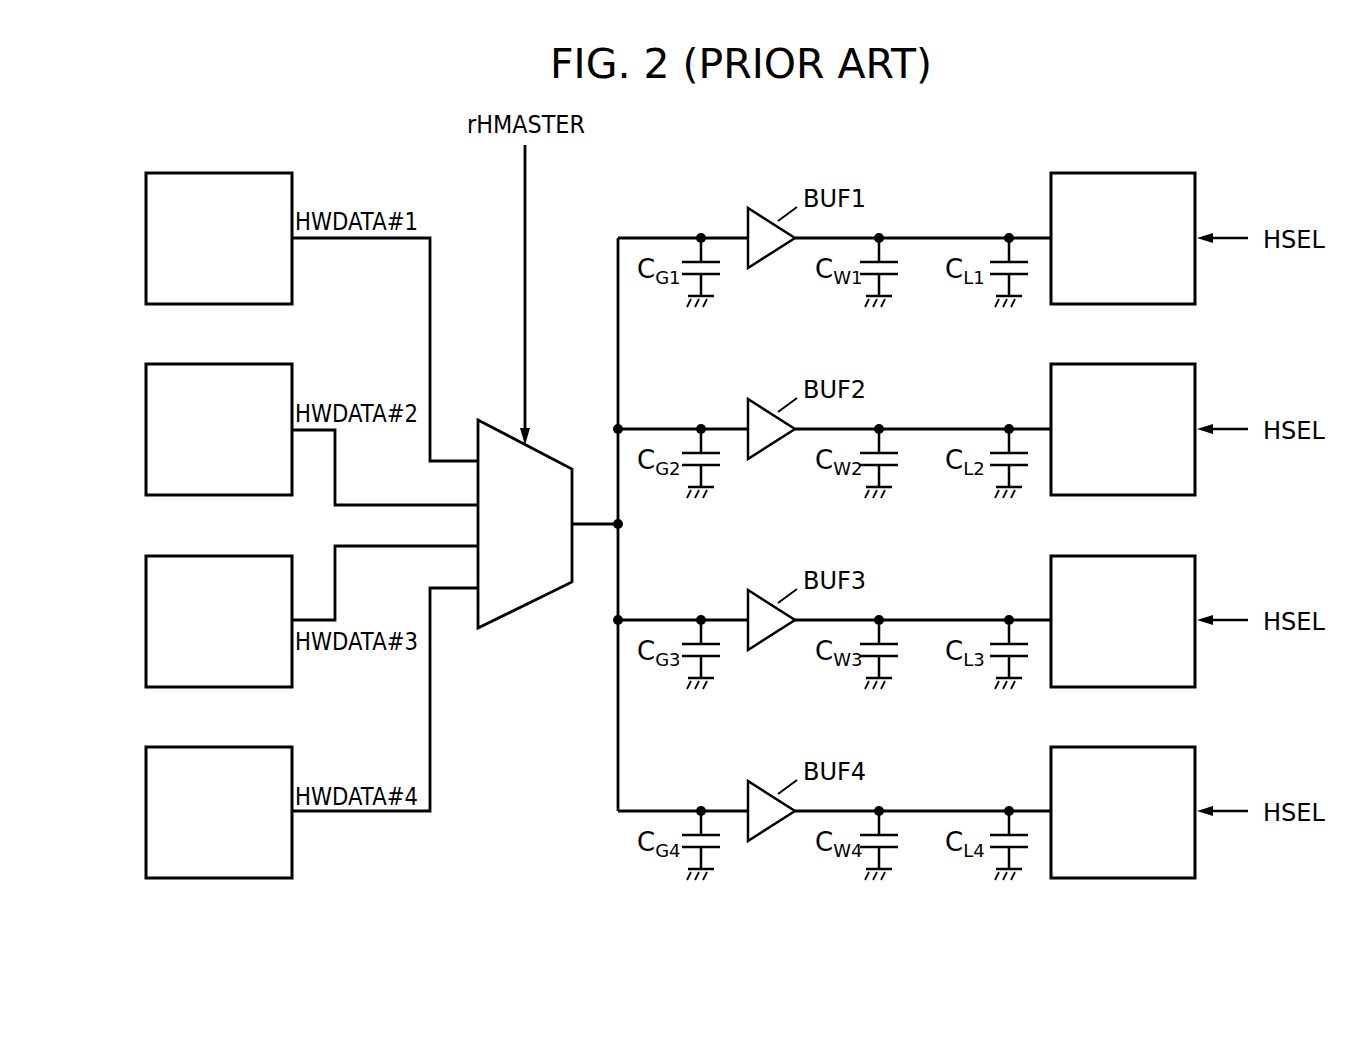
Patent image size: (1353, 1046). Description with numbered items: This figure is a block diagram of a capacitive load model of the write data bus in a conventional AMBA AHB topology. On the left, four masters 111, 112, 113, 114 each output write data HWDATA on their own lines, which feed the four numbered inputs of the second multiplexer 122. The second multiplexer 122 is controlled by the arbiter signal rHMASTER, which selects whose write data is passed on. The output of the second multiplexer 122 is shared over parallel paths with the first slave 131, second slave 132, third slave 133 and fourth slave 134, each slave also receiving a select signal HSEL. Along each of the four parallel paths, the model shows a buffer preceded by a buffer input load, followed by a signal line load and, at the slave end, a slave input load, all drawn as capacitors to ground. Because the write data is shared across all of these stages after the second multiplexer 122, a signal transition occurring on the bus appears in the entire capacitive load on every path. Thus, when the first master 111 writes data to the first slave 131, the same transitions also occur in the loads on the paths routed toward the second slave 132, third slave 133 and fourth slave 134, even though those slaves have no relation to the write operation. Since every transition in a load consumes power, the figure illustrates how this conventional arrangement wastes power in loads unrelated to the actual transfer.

The first master 111 is at (220, 172).
The master 112 is at (220, 363).
The master 113 is at (220, 555).
The master 114 is at (220, 746).
The second multiplexer 122 is at (552, 456).
The first slave 131 is at (1125, 169).
The second slave 132 is at (1125, 360).
The third slave 133 is at (1125, 552).
The fourth slave 134 is at (1125, 743).